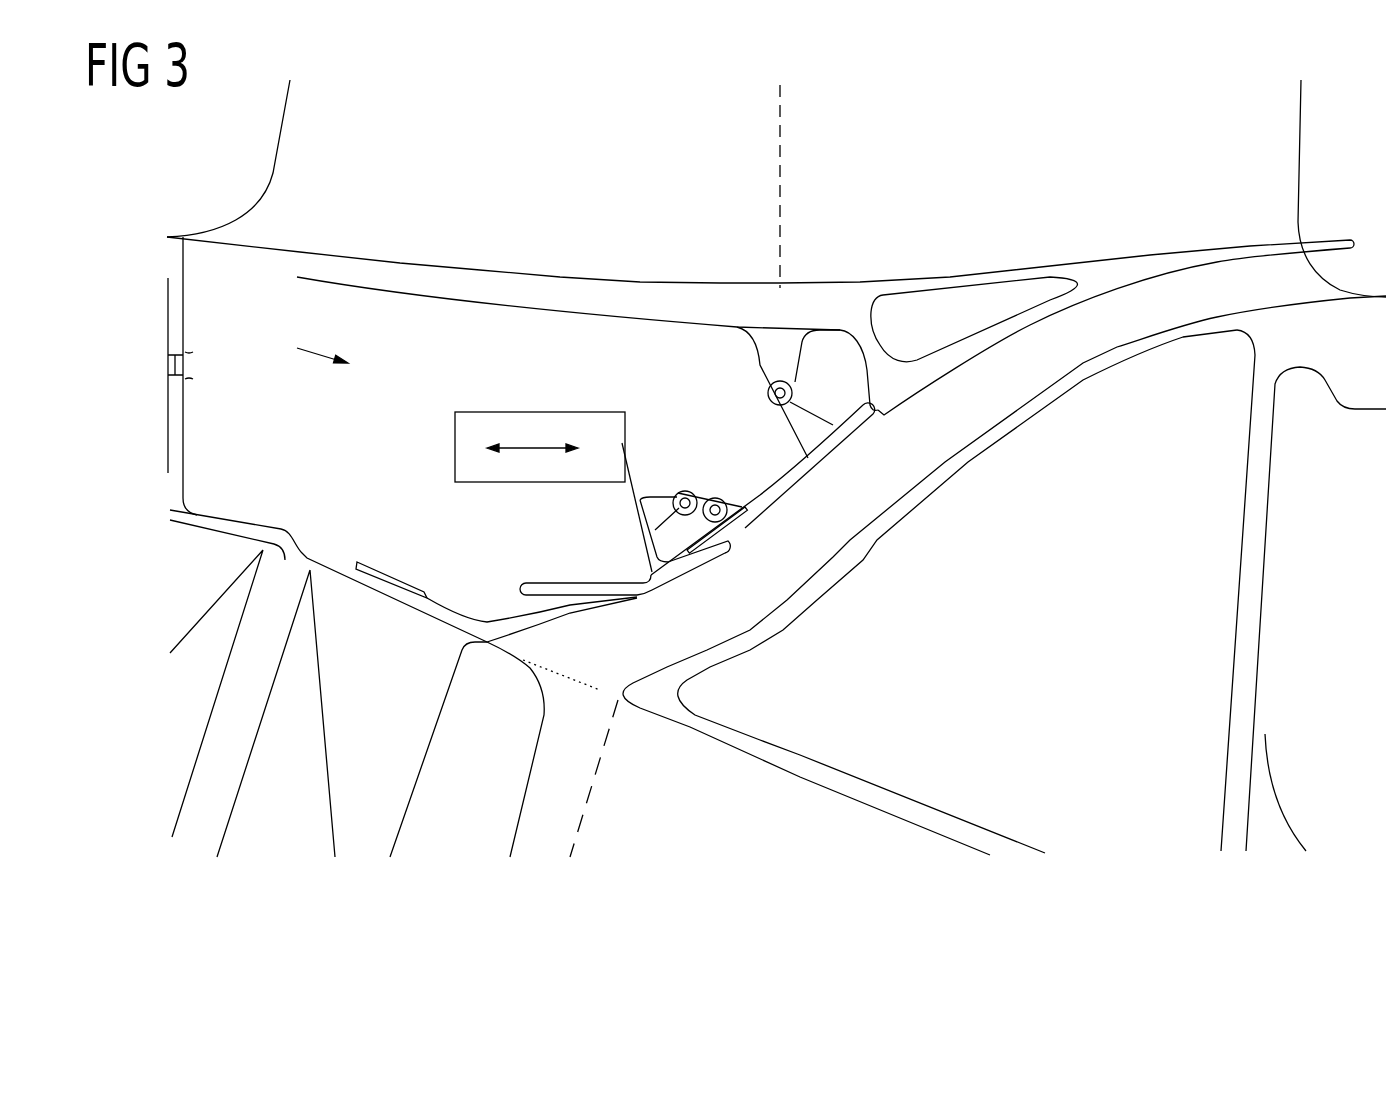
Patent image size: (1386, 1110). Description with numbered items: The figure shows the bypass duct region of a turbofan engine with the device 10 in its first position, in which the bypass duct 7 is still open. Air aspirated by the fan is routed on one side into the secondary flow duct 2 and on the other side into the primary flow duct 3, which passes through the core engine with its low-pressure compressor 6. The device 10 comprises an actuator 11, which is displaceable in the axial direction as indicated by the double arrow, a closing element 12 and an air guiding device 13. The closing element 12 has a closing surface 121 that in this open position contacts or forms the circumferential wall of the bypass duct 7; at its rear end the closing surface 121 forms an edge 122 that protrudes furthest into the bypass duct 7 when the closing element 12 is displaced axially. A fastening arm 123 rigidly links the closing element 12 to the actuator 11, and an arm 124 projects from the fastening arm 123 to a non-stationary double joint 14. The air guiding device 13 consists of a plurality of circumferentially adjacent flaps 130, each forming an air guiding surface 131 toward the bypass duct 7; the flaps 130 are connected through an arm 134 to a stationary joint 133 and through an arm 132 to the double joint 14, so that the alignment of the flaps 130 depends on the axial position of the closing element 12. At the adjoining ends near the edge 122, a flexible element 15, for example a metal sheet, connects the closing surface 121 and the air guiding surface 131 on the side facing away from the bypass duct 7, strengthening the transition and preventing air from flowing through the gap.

The secondary flow duct 2 is at (1001, 186).
The primary flow duct 3 is at (665, 816).
The low-pressure compressor 6 is at (390, 711).
The bypass duct 7 is at (1012, 388).
The device 10 is at (322, 340).
The actuator 11 is at (495, 410).
The closing element 12 is at (575, 554).
The closing surface 121 is at (663, 580).
The edge 122 is at (742, 549).
The fastening arm 123 is at (625, 523).
The arm 124 is at (657, 510).
The air guiding device 13 is at (803, 427).
The flaps 130 is at (845, 438).
The air guiding surface 131 is at (790, 478).
The arm 132 is at (733, 505).
The stationary joint 133 is at (791, 389).
The arm 134 is at (798, 413).
The non-stationary double joint 14 is at (700, 492).
The element 15 is at (712, 538).